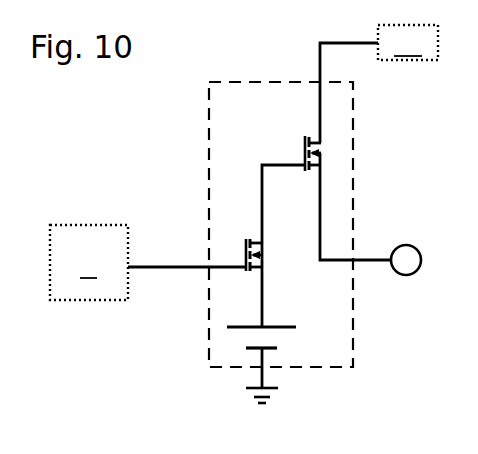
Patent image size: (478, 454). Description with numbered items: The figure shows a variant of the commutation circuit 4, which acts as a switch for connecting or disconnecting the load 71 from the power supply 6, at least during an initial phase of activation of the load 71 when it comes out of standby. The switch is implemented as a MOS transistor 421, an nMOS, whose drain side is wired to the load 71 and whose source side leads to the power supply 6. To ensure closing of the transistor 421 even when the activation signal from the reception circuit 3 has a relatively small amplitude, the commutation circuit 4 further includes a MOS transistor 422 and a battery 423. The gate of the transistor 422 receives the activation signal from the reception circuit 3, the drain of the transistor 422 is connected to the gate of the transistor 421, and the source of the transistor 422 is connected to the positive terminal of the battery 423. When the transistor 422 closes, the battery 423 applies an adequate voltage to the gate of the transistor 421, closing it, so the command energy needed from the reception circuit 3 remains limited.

The reception circuit 3 is at (89, 262).
The commutation circuit 4 is at (353, 228).
The power supply 6 is at (406, 275).
The load 71 is at (408, 42).
The MOS transistor 421 is at (305, 138).
The MOS transistor 422 is at (246, 240).
The battery 423 is at (245, 348).